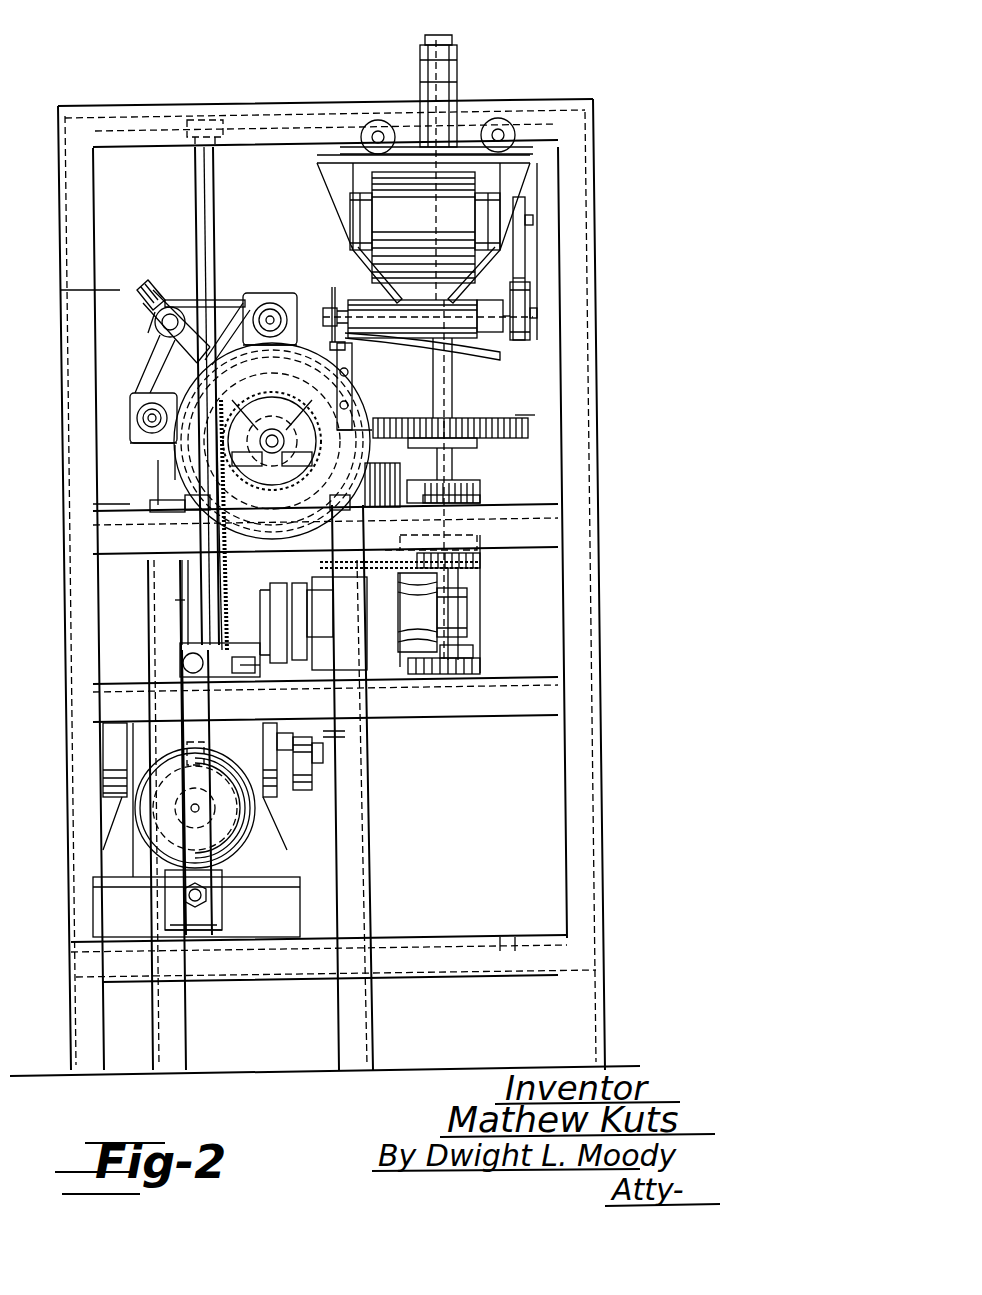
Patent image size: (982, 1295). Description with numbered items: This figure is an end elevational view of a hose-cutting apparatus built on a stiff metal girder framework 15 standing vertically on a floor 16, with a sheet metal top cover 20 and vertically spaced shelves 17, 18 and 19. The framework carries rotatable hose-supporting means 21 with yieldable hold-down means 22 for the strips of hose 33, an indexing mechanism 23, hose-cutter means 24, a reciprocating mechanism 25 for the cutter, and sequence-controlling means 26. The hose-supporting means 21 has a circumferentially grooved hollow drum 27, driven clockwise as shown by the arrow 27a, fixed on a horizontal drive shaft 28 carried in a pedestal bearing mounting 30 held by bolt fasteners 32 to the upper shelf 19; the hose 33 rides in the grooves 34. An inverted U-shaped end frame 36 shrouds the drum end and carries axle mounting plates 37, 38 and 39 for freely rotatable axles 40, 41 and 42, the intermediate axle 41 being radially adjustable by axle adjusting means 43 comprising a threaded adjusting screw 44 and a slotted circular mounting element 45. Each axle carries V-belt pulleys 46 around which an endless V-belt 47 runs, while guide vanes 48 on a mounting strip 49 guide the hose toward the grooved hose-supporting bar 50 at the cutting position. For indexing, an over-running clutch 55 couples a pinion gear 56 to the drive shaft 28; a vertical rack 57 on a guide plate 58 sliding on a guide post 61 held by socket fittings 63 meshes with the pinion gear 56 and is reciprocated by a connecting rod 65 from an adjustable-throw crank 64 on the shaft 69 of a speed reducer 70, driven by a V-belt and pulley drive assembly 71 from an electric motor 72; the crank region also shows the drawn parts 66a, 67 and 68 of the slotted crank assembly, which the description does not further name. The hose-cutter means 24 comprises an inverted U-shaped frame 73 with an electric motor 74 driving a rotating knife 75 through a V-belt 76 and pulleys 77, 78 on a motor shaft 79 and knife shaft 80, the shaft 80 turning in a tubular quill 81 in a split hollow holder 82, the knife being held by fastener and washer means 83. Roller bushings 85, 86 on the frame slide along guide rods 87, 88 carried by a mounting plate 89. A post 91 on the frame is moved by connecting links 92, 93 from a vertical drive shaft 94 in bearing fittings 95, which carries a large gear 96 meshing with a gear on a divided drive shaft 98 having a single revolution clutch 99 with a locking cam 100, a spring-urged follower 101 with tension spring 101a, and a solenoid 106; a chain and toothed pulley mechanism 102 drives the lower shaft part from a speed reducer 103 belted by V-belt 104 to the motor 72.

The girder framework 15 is at (598, 863).
The floor 16 is at (638, 1068).
The lower shelf 17 is at (500, 937).
The intermediate shelf 18 is at (515, 690).
The upper shelf 19 is at (560, 509).
The top cover 20 is at (580, 104).
The hose-supporting means 21 is at (110, 489).
The yieldable hold-down means 22 is at (112, 304).
The indexing mechanism 23 is at (154, 588).
The hose-cutter means 24 is at (562, 239).
The reciprocating mechanism 25 is at (522, 419).
The sequence controlling means 26 is at (460, 483).
The hollow drum 27 is at (263, 575).
The clockwise direction arrow 27a is at (360, 402).
The drive shaft 28 is at (270, 410).
The bearing mounting 30 is at (277, 420).
The bolt fasteners 32 is at (195, 530).
The strip of hose 33 is at (500, 366).
The drum groove 34 is at (265, 558).
The end frame 36 is at (360, 426).
The lower axle mounting plate 37 is at (135, 441).
The intermediate axle mounting plate 38 is at (162, 292).
The upper axle mounting plate 39 is at (284, 285).
The lower axle 40 is at (150, 419).
The intermediate axle 41 is at (160, 340).
The upper axle 42 is at (272, 318).
The axle adjusting means 43 is at (140, 296).
The threaded adjusting screw 44 is at (148, 318).
The circular mounting element 45 is at (180, 310).
The V-belt pulley 46 is at (250, 300).
The endless V-belt 47 is at (214, 320).
The guide vane 48 is at (160, 478).
The mounting strip 49 is at (150, 505).
The hose-supporting bar 50 is at (348, 372).
The over-running clutch 55 is at (262, 490).
The pinion gear 56 is at (280, 490).
The vertical rack 57 is at (266, 592).
The guide plate 58 is at (195, 642).
The guide post 61 is at (205, 163).
The socket fitting 63 is at (188, 128).
The adjustable-throw crank 64 is at (235, 842).
The connecting rod 65 is at (204, 735).
The bracket 66a is at (205, 752).
The nut 67 is at (207, 898).
The bracket 68 is at (215, 922).
The speed reducer shaft 69 is at (212, 826).
The speed reducer 70 is at (280, 793).
The V-belt and pulley drive assembly 71 is at (330, 733).
The electric motor 72 is at (460, 635).
The U-shaped frame 73 is at (317, 181).
The electric motor 74 is at (408, 233).
The rotating knife 75 is at (352, 312).
The V-belt 76 is at (518, 278).
The pulley 77 is at (530, 293).
The pulley 78 is at (525, 240).
The motor shaft 79 is at (533, 220).
The knife shaft 80 is at (537, 313).
The tubular quill 81 is at (492, 352).
The split hollow holder 82 is at (462, 345).
The spline and nut fastener and washer means 83 is at (330, 300).
The roller bushing 85 is at (540, 88).
The roller bushing 86 is at (365, 118).
The guide rod 87 is at (497, 120).
The guide rod 88 is at (372, 120).
The mounting plate 89 is at (462, 100).
The post 91 is at (456, 70).
The connecting link 92 is at (420, 44).
The second connecting link 93 is at (420, 80).
The vertical drive shaft 94 is at (415, 103).
The bearing fitting 95 is at (470, 520).
The large gear 96 is at (508, 440).
The divided drive shaft 98 is at (458, 590).
The single revolution clutch 99 is at (460, 548).
The locking cam 100 is at (475, 495).
The follower 101 is at (396, 518).
The tension spring 101a is at (400, 535).
The chain and toothed pulley mechanism 102 is at (460, 575).
The speed reducer 103 is at (420, 617).
The V-belt 104 is at (322, 592).
The solenoid 106 is at (386, 480).